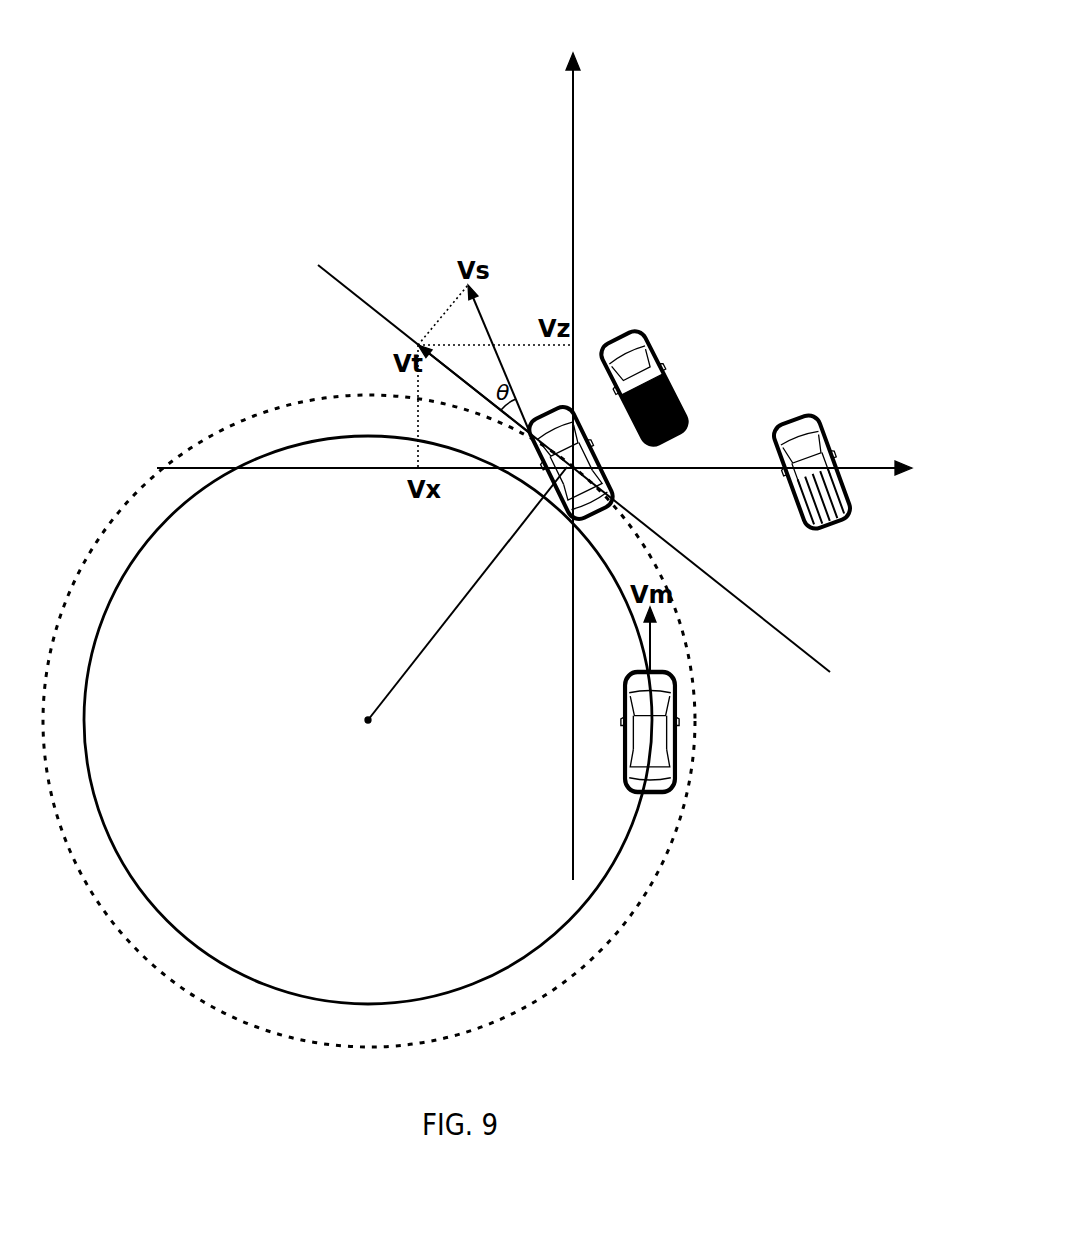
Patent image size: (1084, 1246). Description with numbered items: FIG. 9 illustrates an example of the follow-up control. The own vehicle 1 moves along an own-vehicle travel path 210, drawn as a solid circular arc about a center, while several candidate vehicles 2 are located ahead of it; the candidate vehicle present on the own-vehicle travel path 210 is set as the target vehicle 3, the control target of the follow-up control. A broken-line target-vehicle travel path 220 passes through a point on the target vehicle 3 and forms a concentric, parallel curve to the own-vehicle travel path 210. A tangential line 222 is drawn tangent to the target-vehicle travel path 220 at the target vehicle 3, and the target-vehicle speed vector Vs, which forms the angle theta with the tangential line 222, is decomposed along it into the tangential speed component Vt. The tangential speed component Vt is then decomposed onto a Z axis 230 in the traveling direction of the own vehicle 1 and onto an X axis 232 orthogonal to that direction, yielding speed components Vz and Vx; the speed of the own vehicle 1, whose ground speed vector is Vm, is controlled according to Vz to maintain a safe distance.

The own vehicle 1 is at (628, 680).
The candidate vehicle 2 is at (627, 333).
The target vehicle 3 is at (560, 412).
The own-vehicle travel path 210 is at (625, 847).
The target-vehicle travel path 220 is at (325, 397).
The tangential line 222 is at (680, 552).
The Z axis 230 is at (574, 237).
The X axis 232 is at (870, 467).